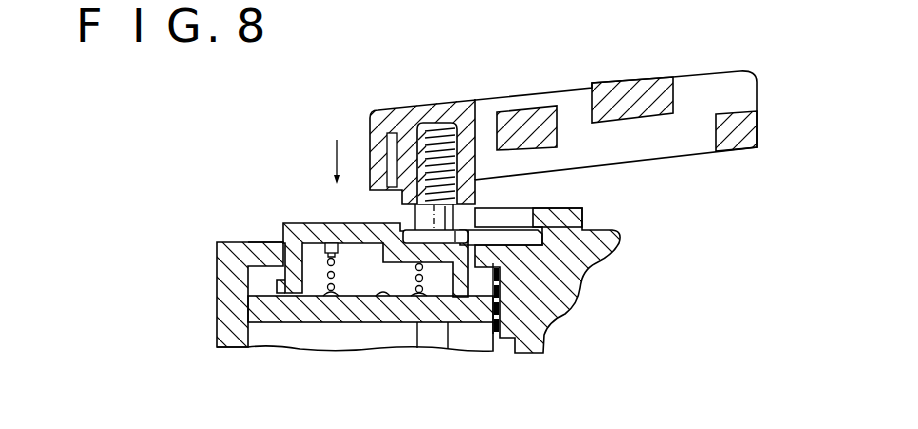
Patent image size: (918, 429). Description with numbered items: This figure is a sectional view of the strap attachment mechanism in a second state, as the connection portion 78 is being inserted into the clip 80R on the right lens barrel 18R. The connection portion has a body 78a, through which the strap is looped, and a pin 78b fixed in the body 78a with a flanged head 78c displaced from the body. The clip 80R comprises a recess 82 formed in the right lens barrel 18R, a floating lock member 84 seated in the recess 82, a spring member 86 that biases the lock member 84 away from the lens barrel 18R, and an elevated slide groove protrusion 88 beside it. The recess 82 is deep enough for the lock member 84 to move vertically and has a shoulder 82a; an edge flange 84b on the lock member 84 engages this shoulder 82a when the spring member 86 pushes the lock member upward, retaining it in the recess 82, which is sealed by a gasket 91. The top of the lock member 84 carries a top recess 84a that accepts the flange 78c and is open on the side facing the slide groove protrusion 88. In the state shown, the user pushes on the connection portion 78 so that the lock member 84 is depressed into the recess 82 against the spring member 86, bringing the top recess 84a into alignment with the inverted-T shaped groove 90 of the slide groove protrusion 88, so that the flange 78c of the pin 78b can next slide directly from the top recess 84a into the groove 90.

The connection portion 78 is at (547, 87).
The body 78a is at (684, 155).
The pin 78b is at (448, 176).
The flanged head 78c is at (472, 234).
The clip 80R is at (317, 177).
The right lens barrel 18R is at (219, 236).
The recess 82 is at (383, 297).
The shoulder 82a is at (257, 252).
The floating lock member 84 is at (302, 245).
The top recess 84a is at (403, 226).
The edge flange 84b is at (278, 286).
The spring member 86 is at (327, 297).
The slide groove protrusion 88 is at (582, 214).
The inverted-T shaped groove 90 is at (588, 270).
The gasket 91 is at (497, 336).